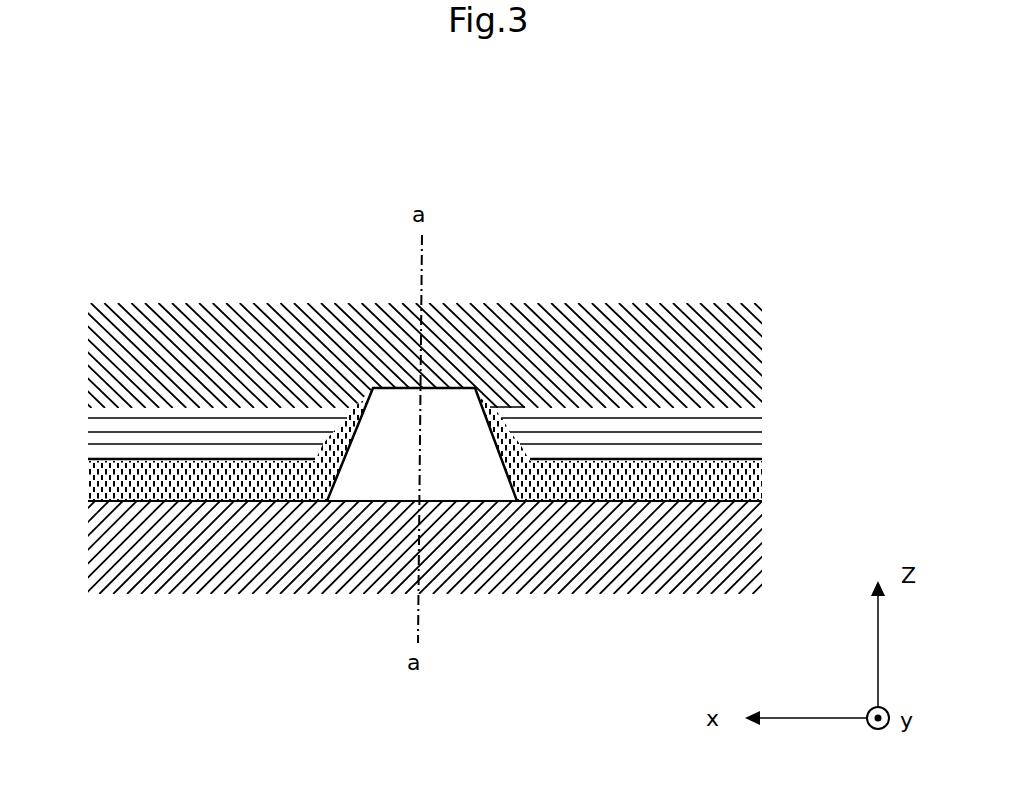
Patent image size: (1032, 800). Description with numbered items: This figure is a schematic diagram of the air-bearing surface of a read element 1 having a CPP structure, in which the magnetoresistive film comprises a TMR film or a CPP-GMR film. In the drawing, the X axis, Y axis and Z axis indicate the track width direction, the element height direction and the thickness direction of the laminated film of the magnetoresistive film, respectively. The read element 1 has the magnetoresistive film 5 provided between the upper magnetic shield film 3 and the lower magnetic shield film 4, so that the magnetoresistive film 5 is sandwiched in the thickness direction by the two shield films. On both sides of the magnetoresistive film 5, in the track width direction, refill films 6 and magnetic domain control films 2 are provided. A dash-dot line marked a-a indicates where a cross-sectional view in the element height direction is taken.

The read element 1 is at (169, 200).
The magnetic domain control film 2 is at (745, 442).
The upper magnetic shield film 3 is at (217, 332).
The lower magnetic shield film 4 is at (590, 555).
The magnetoresistive film 5 is at (458, 408).
The refill film 6 is at (97, 482).